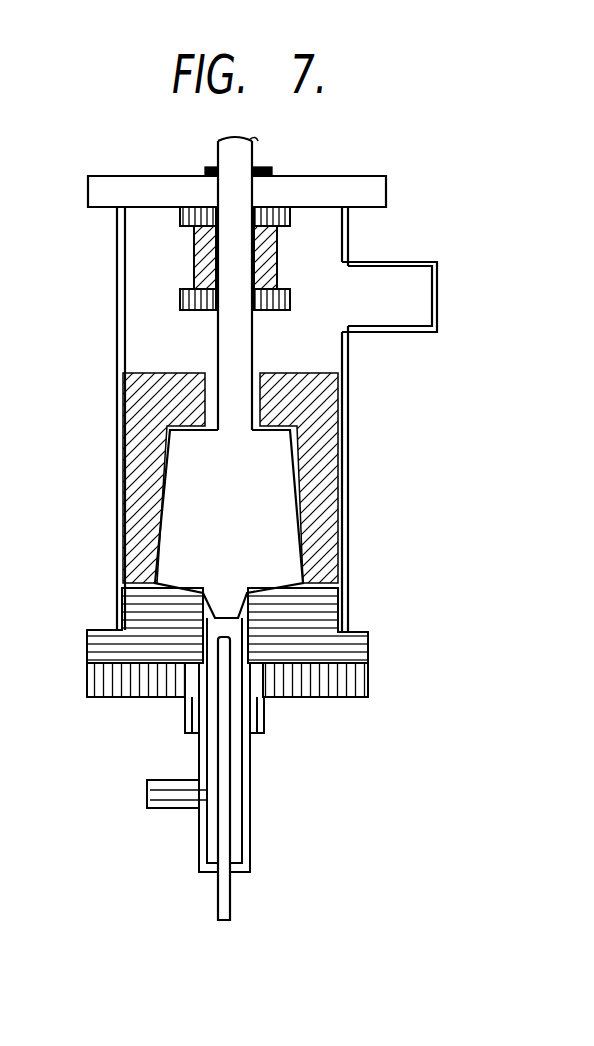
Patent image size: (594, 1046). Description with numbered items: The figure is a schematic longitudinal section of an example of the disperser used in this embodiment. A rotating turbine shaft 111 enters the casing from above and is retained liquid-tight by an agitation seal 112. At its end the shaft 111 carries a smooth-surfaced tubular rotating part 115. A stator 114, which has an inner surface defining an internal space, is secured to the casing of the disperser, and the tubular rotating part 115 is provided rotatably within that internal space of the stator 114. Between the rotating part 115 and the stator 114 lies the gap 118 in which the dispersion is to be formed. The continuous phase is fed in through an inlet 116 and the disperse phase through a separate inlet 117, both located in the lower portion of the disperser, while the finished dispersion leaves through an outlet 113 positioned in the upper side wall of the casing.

The rotating turbine shaft 111 is at (248, 147).
The agitation seal 112 is at (278, 254).
The outlet for dispersion 113 is at (415, 276).
The stator 114 is at (333, 397).
The tubular rotating part 115 is at (280, 476).
The inlet for the continuous phase 116 is at (176, 794).
The inlet for the disperse phase 117 is at (220, 896).
The gap 118 is at (312, 538).